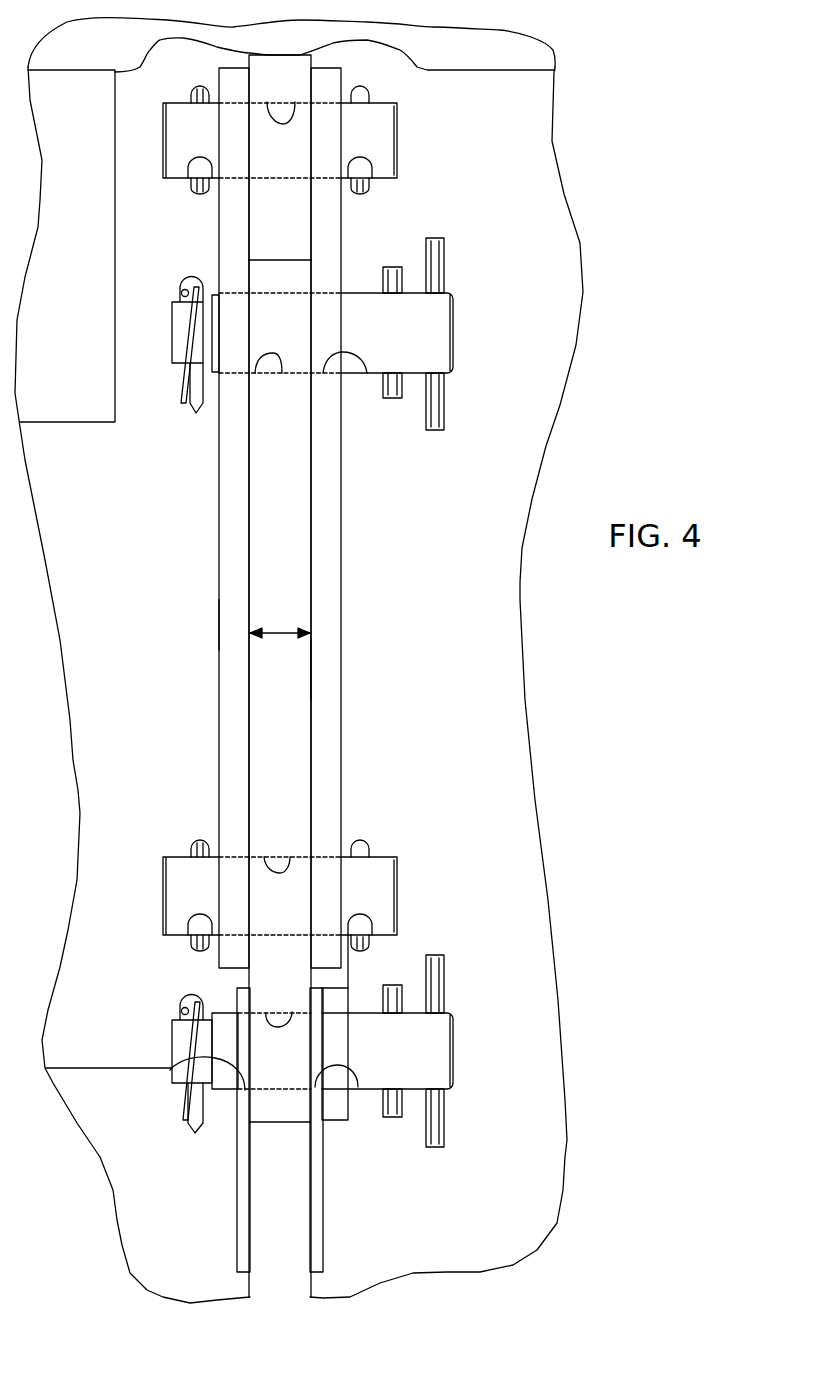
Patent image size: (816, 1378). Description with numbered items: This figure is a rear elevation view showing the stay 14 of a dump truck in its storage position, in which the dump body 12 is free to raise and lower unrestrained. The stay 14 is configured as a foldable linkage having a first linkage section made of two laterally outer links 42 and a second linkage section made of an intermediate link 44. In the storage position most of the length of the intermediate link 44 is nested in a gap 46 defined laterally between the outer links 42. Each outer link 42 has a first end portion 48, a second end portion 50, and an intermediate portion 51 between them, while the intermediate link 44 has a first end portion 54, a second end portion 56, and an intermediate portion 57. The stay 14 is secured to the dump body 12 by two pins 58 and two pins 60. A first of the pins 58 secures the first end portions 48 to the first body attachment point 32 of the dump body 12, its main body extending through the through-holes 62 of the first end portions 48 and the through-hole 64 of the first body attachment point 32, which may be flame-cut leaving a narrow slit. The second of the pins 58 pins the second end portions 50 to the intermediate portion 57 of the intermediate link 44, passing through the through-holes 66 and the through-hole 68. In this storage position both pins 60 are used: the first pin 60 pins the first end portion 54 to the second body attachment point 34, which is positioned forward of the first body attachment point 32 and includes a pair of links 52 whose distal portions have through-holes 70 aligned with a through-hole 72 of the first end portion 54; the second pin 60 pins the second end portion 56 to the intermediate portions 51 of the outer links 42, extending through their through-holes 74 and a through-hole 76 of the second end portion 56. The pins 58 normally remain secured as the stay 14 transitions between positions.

The dump body 12 is at (536, 198).
The stay 14 is at (172, 585).
The first body attachment point 32 is at (287, 133).
The second body attachment point 34 is at (237, 1033).
The outer links 42 is at (219, 530).
The intermediate link 44 is at (282, 715).
The gap 46 is at (281, 625).
The first end portion 48 is at (219, 137).
The second end portion 50 is at (219, 895).
The intermediate portion 51 is at (218, 622).
The links 52 is at (237, 1212).
The first end portion 54 is at (288, 1047).
The second end portion 56 is at (292, 327).
The intermediate portion 57 is at (287, 673).
The pins 58 is at (387, 158).
The pins 60 is at (440, 316).
The through-hole 62 is at (236, 105).
The through-hole 64 is at (270, 100).
The through-hole 66 is at (235, 857).
The through-hole 68 is at (290, 857).
The through-hole 70 is at (170, 1070).
The through-hole 72 is at (266, 1013).
The through-holes 74 is at (233, 375).
The through-hole 76 is at (255, 373).